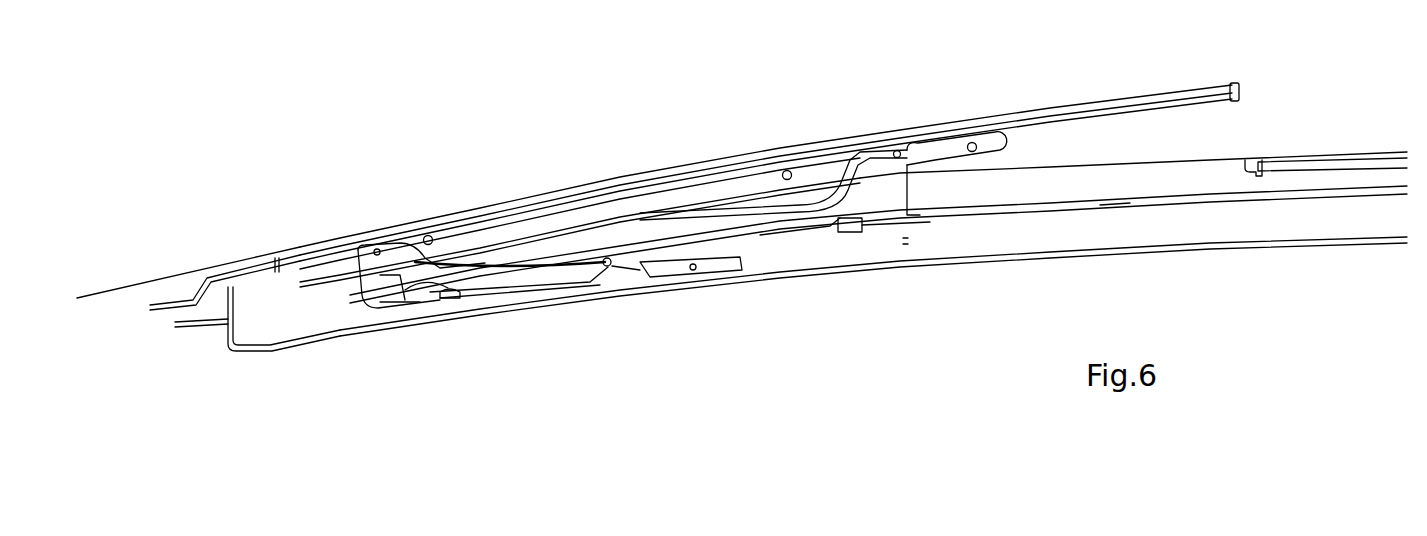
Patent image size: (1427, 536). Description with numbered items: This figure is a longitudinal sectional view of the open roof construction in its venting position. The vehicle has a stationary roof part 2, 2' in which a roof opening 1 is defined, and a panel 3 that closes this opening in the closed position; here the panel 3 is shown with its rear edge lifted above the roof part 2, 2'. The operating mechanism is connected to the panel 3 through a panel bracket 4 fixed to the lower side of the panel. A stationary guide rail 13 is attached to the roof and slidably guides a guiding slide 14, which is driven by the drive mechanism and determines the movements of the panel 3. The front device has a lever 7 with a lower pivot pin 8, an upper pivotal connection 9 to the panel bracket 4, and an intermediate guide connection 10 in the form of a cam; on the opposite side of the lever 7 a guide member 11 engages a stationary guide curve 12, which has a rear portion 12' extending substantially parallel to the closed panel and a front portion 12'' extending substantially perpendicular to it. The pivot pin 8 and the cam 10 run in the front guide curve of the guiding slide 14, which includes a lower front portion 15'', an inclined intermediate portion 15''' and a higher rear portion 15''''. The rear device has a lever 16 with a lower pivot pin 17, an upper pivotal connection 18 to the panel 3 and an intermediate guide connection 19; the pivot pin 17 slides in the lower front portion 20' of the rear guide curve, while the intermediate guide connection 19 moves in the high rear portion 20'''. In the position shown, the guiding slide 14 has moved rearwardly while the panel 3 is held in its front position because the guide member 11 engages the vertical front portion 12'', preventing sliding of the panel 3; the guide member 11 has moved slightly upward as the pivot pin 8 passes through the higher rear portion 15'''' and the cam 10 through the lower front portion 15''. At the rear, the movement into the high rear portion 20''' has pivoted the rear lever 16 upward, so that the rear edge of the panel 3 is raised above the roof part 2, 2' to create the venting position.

The roof opening 1 is at (1247, 158).
The roof part 2 is at (225, 251).
The roof part 2' is at (1332, 115).
The panel 3 is at (1088, 104).
The panel bracket 4 is at (722, 190).
The lever 7 is at (478, 263).
The pivot pin 8 is at (607, 258).
The upper pivotal connection 9 is at (376, 249).
The intermediate guide connection 10 is at (450, 300).
The guide member 11 is at (428, 294).
The stationary guide curve 12 is at (873, 261).
The rear portion 12' is at (1124, 258).
The front portion 12'' is at (397, 329).
The stationary guide rail 13 is at (297, 352).
The guiding slide 14 is at (912, 252).
The lower front portion 15'' is at (519, 316).
The inclined intermediate portion 15''' is at (533, 322).
The higher rear portion 15'''' is at (644, 310).
The lever 16 is at (868, 168).
The pivot pin 17 is at (695, 270).
The upper pivotal connection 18 is at (897, 150).
The intermediate guide connection 19 is at (848, 233).
The lower front portion 20' is at (691, 301).
The high rear portion 20''' is at (800, 277).